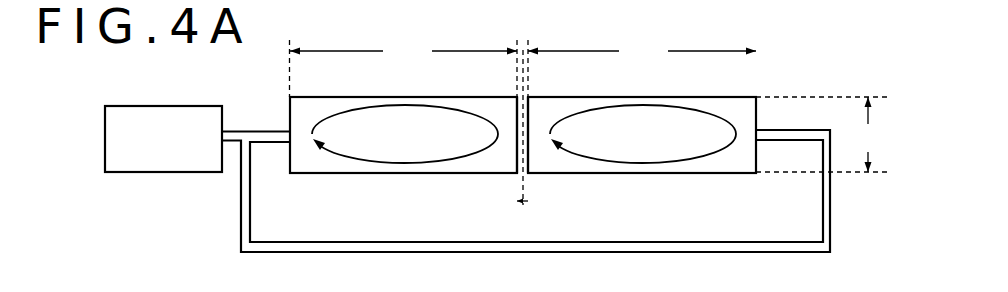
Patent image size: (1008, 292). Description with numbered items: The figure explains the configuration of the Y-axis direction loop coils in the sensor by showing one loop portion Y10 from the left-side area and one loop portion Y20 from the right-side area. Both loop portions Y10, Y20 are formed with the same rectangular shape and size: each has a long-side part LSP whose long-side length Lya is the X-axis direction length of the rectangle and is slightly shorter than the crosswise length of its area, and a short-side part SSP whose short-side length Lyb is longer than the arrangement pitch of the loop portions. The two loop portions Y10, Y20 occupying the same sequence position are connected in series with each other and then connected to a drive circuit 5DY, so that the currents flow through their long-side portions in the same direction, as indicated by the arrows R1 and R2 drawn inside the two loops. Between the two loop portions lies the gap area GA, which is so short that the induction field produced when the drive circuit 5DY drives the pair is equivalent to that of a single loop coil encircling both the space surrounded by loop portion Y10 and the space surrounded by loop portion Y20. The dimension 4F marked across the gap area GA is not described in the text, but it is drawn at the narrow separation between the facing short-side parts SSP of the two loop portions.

The drive circuit 5DY is at (145, 106).
The Y-axis direction loop portion Y10 is at (380, 174).
The Y-axis direction loop portion Y20 is at (595, 174).
The long-side part LSP is at (327, 97).
The short-side part SSP is at (516, 155).
The gap area GA is at (523, 93).
The gap width 4F is at (524, 201).
The arrow indicating current direction R1 is at (368, 108).
The arrow indicating current direction R2 is at (607, 107).
The long-side length Lya is at (523, 67).
The short-side length Lyb is at (824, 134).